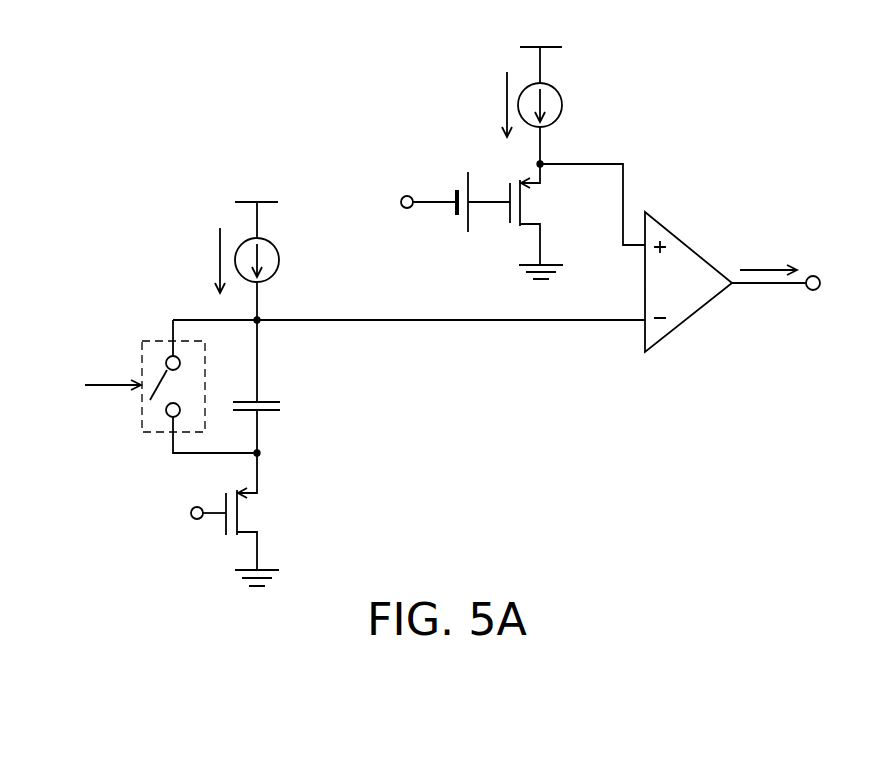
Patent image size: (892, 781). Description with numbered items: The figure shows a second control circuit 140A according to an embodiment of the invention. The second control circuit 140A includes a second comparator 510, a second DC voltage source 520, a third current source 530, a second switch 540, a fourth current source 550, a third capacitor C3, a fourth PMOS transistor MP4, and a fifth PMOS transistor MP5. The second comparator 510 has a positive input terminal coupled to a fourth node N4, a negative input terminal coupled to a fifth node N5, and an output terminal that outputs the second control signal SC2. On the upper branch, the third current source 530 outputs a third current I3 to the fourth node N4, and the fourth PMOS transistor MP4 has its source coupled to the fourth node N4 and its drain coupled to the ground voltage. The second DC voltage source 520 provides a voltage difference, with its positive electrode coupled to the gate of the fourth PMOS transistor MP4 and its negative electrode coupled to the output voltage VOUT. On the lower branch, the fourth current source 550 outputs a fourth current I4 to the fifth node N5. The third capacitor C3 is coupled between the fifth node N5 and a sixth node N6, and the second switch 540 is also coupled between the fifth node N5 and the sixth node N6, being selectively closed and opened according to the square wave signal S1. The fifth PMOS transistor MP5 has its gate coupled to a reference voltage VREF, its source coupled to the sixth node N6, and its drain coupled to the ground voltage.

The second control circuit 140A is at (127, 43).
The second comparator 510 is at (645, 212).
The second DC voltage source 520 is at (455, 187).
The third current source 530 is at (562, 105).
The second switch 540 is at (140, 428).
The fourth current source 550 is at (279, 260).
The third capacitor C3 is at (282, 405).
The fourth PMOS transistor MP4 is at (532, 204).
The fifth PMOS transistor MP5 is at (247, 512).
The fourth node N4 is at (543, 162).
The fifth node N5 is at (260, 323).
The sixth node N6 is at (260, 452).
The square wave signal S1 is at (112, 383).
The third current I3 is at (505, 106).
The fourth current I4 is at (218, 261).
The second control signal SC2 is at (767, 268).
The output voltage VOUT is at (363, 204).
The reference voltage VREF is at (168, 514).